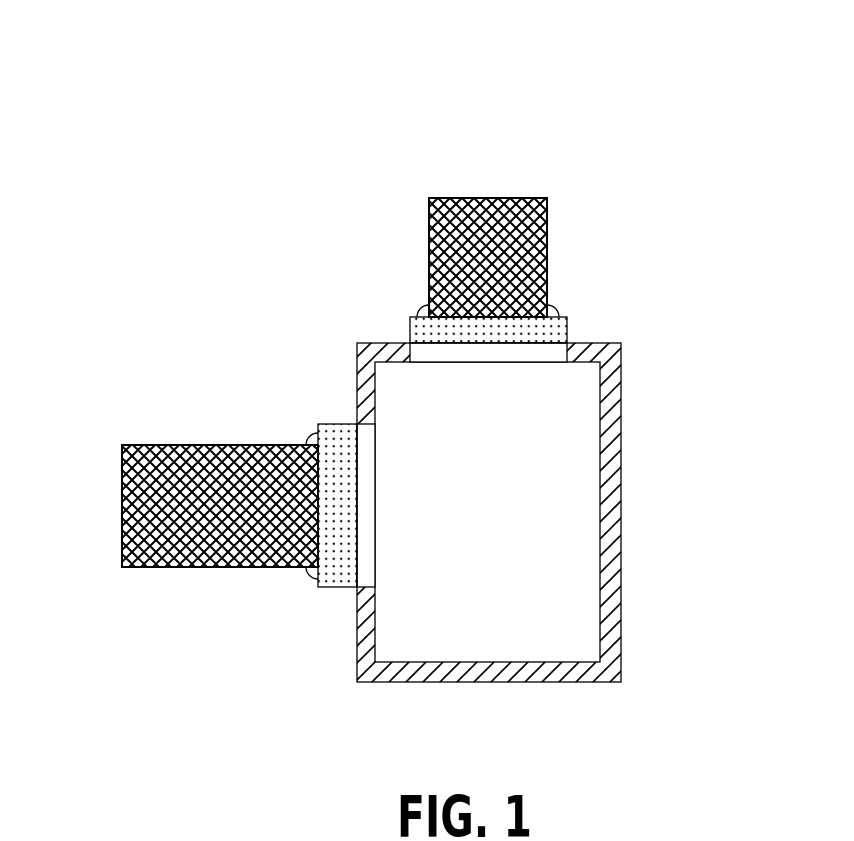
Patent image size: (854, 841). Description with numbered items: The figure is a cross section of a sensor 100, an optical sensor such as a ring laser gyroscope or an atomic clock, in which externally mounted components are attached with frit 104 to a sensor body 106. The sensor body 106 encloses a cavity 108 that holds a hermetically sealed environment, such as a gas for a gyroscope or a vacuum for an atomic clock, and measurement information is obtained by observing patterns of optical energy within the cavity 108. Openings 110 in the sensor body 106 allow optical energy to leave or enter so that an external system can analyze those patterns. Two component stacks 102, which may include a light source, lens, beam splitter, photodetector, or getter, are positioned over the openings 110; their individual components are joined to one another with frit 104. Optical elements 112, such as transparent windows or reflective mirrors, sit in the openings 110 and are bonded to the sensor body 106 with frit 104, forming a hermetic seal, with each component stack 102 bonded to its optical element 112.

The sensor 100 is at (404, 375).
The component stack 102 is at (498, 198).
The frit 104 is at (550, 306).
The sensor body 106 is at (540, 683).
The cavity 108 is at (565, 562).
The openings 110 is at (525, 350).
The optical elements 112 is at (409, 335).